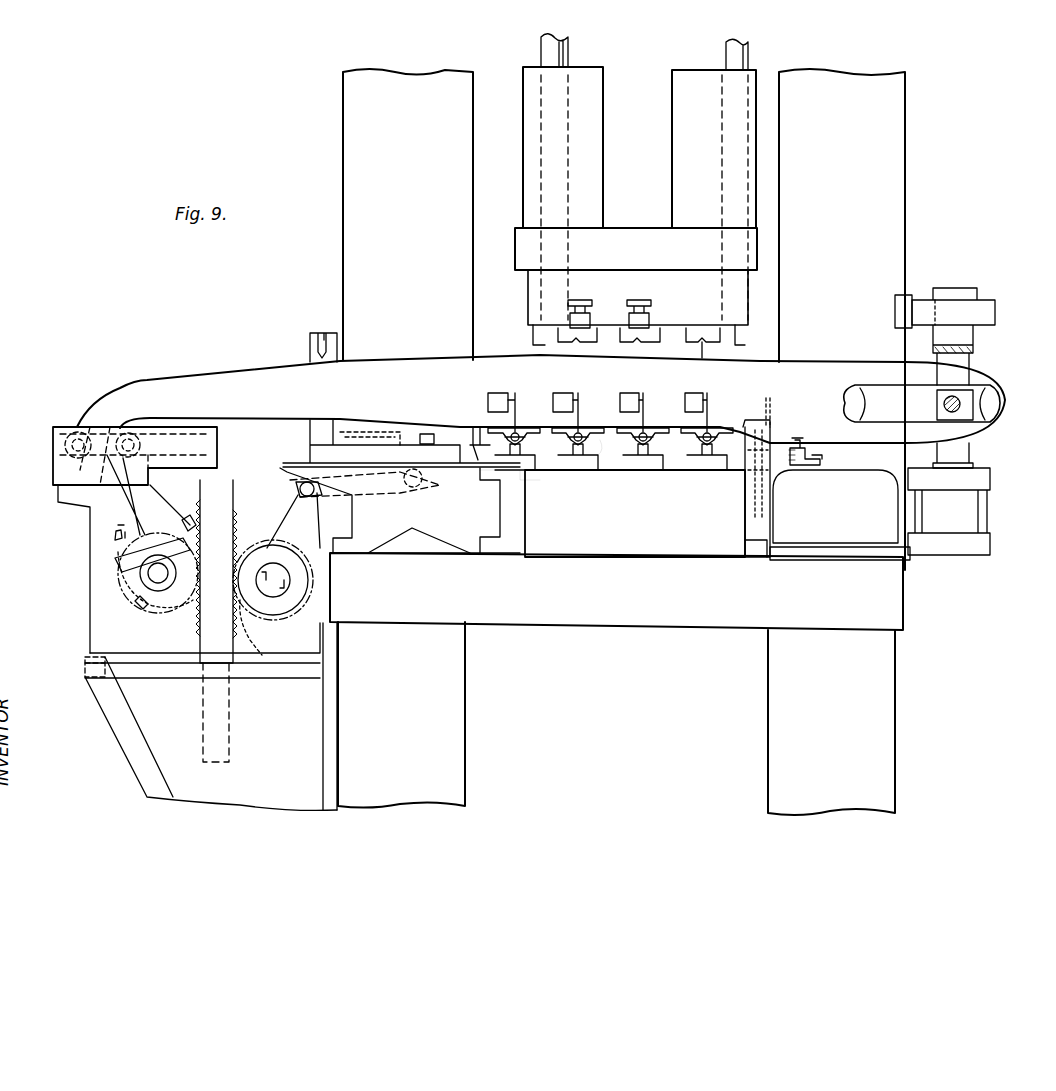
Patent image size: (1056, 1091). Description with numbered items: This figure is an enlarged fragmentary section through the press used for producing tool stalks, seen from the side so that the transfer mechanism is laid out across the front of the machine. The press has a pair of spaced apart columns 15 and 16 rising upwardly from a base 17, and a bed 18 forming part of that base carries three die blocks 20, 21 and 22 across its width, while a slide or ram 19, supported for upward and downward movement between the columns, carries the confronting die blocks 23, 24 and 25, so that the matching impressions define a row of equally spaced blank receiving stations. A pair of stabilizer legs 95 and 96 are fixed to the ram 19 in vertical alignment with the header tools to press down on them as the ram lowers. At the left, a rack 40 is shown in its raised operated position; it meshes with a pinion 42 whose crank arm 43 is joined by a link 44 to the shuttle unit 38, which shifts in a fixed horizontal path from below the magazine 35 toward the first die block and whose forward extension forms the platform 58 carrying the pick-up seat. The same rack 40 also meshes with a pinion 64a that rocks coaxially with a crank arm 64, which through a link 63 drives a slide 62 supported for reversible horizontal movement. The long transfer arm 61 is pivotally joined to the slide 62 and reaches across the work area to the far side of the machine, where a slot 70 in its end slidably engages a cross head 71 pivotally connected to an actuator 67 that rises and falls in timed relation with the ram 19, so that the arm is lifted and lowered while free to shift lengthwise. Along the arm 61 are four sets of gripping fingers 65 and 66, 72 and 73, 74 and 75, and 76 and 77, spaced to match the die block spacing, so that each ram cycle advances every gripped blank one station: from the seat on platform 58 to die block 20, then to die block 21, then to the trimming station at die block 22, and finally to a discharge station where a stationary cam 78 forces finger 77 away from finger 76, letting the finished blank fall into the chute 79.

The column 15 is at (420, 166).
The column 16 is at (862, 229).
The base 17 is at (462, 784).
The bed 18 is at (602, 618).
The ram 19 is at (648, 254).
The die block 20 is at (576, 464).
The die block 21 is at (638, 464).
The die block 22 is at (708, 464).
The die block 23 is at (590, 345).
The die block 24 is at (657, 345).
The die block 25 is at (718, 345).
The magazine 35 is at (299, 350).
The shuttle unit 38 is at (432, 436).
The rack 40 is at (198, 620).
The pinion 42 is at (248, 622).
The crank arm 43 is at (296, 490).
The link 44 is at (335, 500).
The platform 58 is at (474, 425).
The arm 61 is at (183, 385).
The slide 62 is at (55, 443).
The link 63 is at (60, 465).
The crank arm 64 is at (130, 493).
The pinion 64a is at (120, 590).
The finger 65 is at (507, 450).
The finger 66 is at (560, 468).
The actuator 67 is at (965, 462).
The slot 70 is at (890, 388).
The cross head 71 is at (975, 400).
The finger 72 is at (560, 445).
The finger 73 is at (596, 448).
The finger 74 is at (633, 458).
The finger 75 is at (653, 458).
The finger 76 is at (700, 458).
The finger 77 is at (722, 455).
The cam 78 is at (805, 448).
The chute 79 is at (764, 540).
The stabilizer leg 95 is at (566, 312).
The stabilizer leg 96 is at (650, 322).